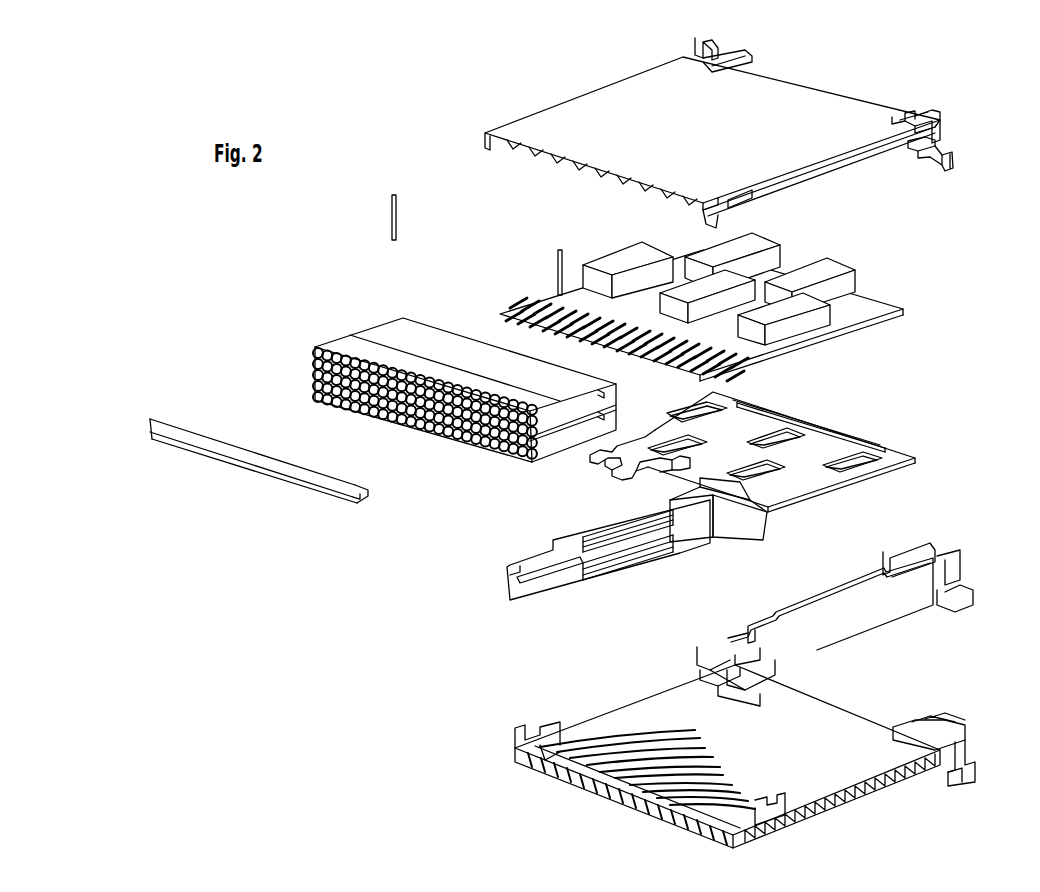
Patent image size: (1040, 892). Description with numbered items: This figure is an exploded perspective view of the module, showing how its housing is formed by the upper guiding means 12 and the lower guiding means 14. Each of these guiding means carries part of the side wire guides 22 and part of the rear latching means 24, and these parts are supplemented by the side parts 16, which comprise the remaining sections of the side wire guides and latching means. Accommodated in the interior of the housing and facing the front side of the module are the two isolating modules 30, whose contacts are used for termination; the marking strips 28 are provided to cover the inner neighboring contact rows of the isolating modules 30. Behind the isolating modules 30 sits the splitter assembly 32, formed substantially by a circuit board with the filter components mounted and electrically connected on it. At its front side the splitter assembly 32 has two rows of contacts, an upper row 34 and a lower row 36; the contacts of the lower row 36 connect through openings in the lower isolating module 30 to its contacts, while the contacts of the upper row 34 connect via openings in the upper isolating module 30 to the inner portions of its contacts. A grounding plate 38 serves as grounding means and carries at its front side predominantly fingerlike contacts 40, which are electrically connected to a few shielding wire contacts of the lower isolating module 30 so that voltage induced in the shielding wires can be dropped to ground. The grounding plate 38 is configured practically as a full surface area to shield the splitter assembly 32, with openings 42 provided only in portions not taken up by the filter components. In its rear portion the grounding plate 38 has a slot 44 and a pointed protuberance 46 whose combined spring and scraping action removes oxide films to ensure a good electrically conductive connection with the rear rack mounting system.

The upper guiding means 12 is at (603, 98).
The lower guiding means 14 is at (820, 723).
The side parts 16 is at (572, 582).
The side wire guides 22 is at (946, 172).
The rear latching means 24 is at (750, 53).
The marking strips 28 is at (255, 458).
The isolating modules 30 is at (345, 343).
The splitter assembly 32 is at (912, 314).
The upper row 34 is at (517, 292).
The lower row 36 is at (500, 308).
The grounding plate 38 is at (774, 444).
The fingerlike contacts 40 is at (633, 472).
The openings 42 is at (892, 467).
The slot 44 is at (863, 433).
The pointed protuberance 46 is at (817, 420).